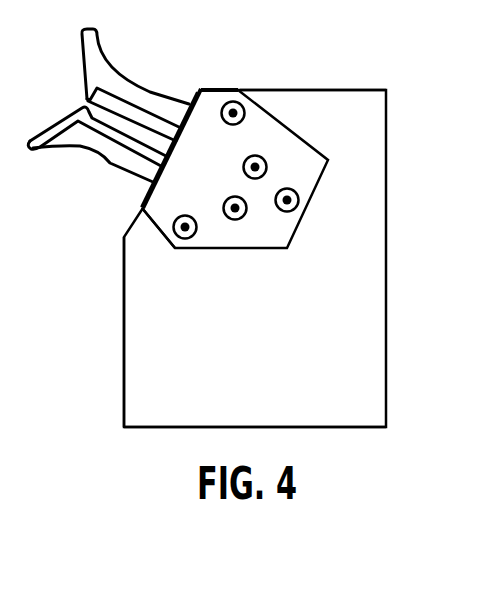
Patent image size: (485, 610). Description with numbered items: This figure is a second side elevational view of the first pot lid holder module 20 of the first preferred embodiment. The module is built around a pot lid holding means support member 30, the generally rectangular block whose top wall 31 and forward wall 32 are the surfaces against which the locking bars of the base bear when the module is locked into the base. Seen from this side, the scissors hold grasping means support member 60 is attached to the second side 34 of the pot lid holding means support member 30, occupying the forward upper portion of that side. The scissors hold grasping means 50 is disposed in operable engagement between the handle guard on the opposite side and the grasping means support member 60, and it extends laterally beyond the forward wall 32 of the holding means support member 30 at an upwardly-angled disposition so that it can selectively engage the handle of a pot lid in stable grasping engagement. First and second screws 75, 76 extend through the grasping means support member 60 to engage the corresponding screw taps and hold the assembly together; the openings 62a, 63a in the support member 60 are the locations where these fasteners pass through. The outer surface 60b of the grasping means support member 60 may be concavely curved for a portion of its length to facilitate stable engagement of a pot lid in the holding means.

The pot lid holder module 20 is at (226, 82).
The pot lid holding means support member 30 is at (389, 208).
The top wall 31 is at (325, 89).
The forward wall 32 is at (124, 309).
The second side 34 is at (231, 396).
The scissors hold grasping means 50 is at (73, 104).
The scissors hold grasping means support member 60 is at (297, 152).
The outer surface 60b is at (165, 206).
The mounting apertures 62a is at (208, 87).
The adjustment apertures 63a is at (263, 158).
The first screw 75 is at (242, 101).
The second screw 76 is at (245, 161).